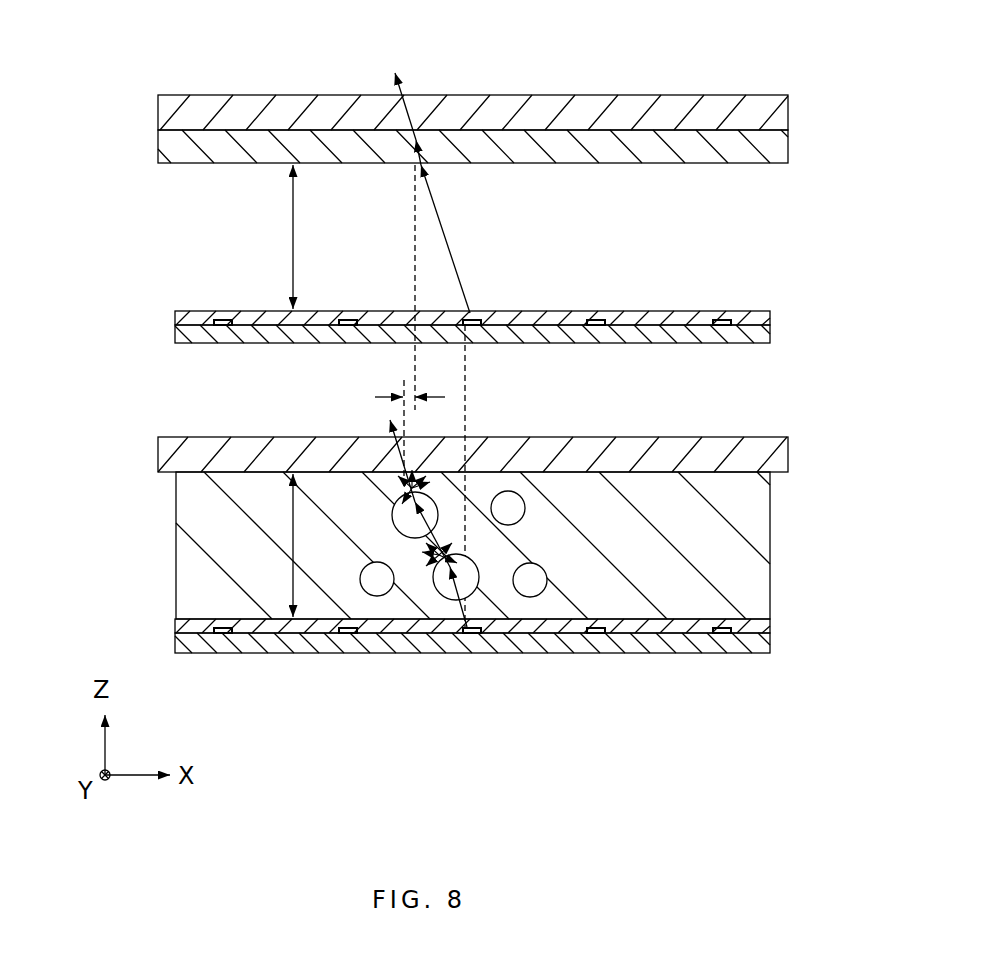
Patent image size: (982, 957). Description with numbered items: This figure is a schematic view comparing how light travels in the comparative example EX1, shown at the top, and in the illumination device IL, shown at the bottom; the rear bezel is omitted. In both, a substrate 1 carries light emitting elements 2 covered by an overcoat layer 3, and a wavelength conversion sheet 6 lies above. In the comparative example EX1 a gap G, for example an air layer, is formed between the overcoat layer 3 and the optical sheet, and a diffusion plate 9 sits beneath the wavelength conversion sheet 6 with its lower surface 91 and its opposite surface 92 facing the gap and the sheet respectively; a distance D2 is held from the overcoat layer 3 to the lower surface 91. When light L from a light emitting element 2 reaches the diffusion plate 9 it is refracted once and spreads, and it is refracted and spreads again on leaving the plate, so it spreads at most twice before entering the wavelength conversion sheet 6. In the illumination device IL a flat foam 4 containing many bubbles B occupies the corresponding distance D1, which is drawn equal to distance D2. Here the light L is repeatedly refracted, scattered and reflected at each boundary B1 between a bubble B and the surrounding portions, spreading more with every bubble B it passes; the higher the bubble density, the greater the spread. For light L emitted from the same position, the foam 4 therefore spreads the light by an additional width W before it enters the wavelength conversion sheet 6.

The substrate 1 is at (762, 336).
The light emitting element 2 is at (721, 328).
The overcoat layer 3 is at (760, 320).
The foam 4 is at (766, 537).
The wavelength conversion sheet 6 is at (786, 107).
The diffusion plate 9 is at (786, 143).
The lower surface of the diffusion plate 91 is at (693, 168).
The upper surface of cover plate 92 is at (733, 122).
The bubble B is at (354, 566).
The boundary B1 is at (392, 511).
The light L is at (456, 265).
The distance D1 is at (275, 545).
The distance D2 is at (275, 237).
The width W is at (407, 392).
The comparative example EX1 is at (130, 75).
The gap G is at (190, 247).
The illumination device IL is at (130, 425).